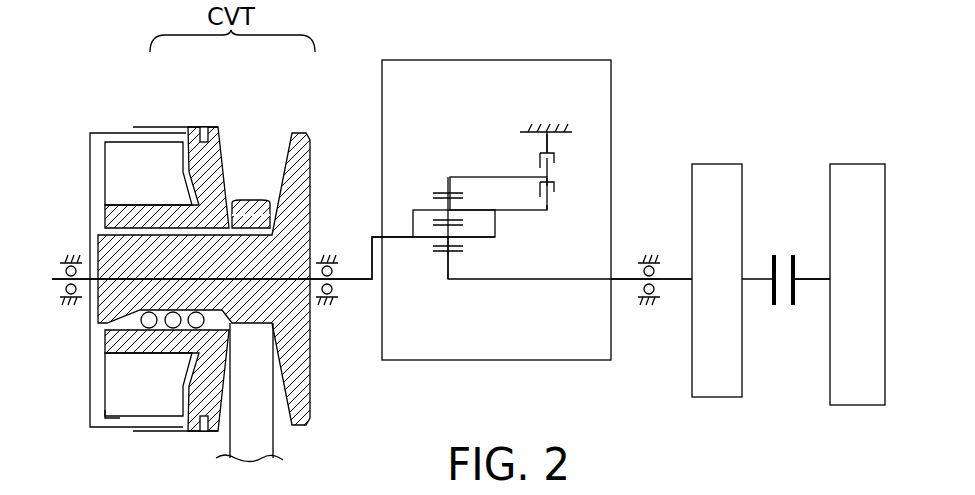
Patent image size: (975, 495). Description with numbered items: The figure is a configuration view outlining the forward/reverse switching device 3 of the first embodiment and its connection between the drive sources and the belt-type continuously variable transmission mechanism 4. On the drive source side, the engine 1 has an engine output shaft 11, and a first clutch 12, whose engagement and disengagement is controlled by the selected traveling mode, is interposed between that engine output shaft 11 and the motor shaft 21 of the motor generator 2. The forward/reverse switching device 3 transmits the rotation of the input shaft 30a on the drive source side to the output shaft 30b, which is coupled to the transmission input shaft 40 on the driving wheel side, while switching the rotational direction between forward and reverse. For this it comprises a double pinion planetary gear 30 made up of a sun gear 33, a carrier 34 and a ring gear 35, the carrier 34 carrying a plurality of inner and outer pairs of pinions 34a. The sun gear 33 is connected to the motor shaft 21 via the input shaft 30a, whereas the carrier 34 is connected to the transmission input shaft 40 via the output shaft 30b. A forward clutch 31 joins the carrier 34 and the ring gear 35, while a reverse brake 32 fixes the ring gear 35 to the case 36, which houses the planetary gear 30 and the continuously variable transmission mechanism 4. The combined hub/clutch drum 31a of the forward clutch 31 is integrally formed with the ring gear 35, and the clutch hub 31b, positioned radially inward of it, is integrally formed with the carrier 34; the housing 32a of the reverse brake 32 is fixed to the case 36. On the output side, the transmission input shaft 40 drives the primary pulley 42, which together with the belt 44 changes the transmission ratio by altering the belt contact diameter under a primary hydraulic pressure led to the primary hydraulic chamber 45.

The engine 1 is at (848, 163).
The motor generator 2 is at (717, 163).
The forward/reverse switching device 3 is at (374, 122).
The belt-type continuously variable transmission mechanism 4 is at (152, 114).
The engine output shaft 11 is at (813, 282).
The first clutch 12 is at (788, 256).
The motor shaft 21 is at (680, 272).
The planetary gear 30 is at (446, 166).
The input shaft 30a is at (630, 268).
The output shaft 30b is at (362, 283).
The forward clutch 31 is at (555, 192).
The combined hub/clutch drum 31a is at (542, 183).
The clutch hub 31b is at (548, 208).
The reverse brake 32 is at (555, 162).
The housing 32a is at (548, 138).
The sun gear 33 is at (443, 256).
The carrier 34 is at (495, 233).
The pinions 34a is at (450, 230).
The ring gear 35 is at (445, 193).
The case 36 is at (526, 130).
The transmission input shaft 40 is at (105, 280).
The primary pulley 42 is at (80, 170).
The belt 44 is at (262, 443).
The primary hydraulic chamber 45 is at (133, 167).